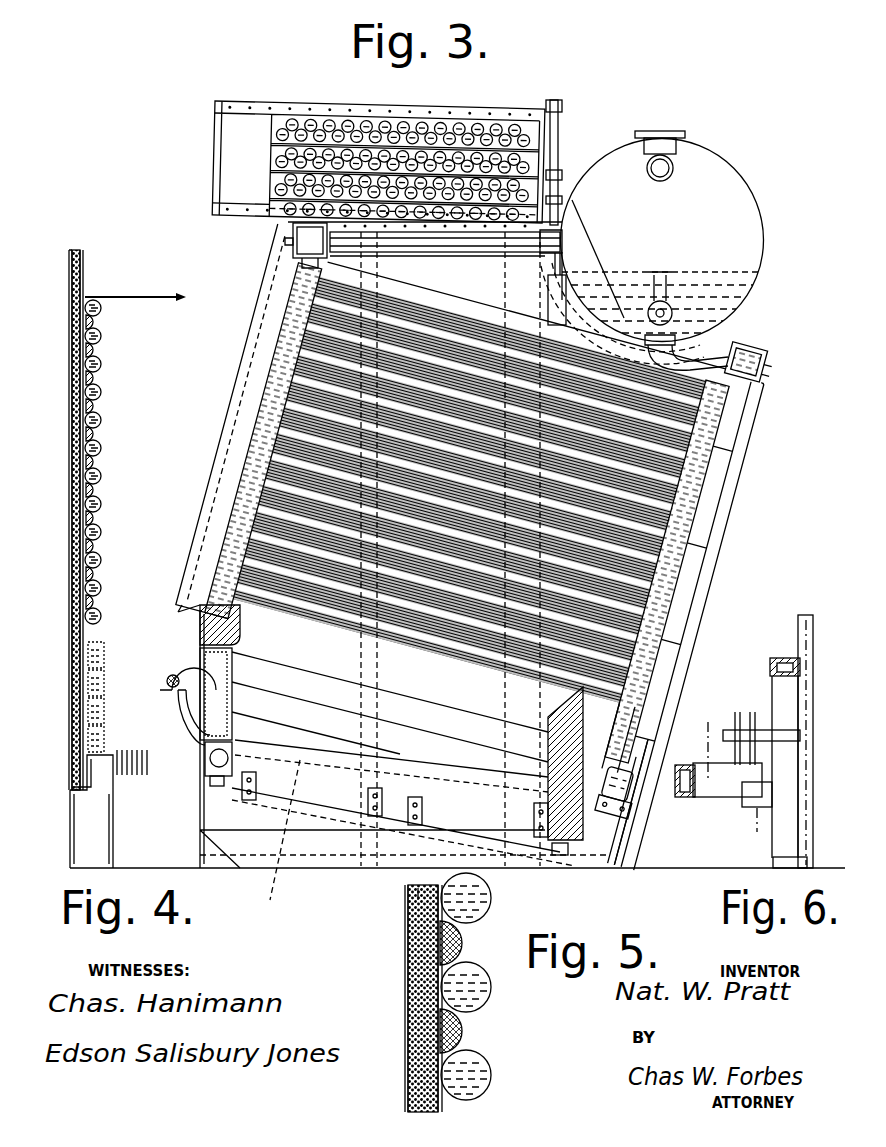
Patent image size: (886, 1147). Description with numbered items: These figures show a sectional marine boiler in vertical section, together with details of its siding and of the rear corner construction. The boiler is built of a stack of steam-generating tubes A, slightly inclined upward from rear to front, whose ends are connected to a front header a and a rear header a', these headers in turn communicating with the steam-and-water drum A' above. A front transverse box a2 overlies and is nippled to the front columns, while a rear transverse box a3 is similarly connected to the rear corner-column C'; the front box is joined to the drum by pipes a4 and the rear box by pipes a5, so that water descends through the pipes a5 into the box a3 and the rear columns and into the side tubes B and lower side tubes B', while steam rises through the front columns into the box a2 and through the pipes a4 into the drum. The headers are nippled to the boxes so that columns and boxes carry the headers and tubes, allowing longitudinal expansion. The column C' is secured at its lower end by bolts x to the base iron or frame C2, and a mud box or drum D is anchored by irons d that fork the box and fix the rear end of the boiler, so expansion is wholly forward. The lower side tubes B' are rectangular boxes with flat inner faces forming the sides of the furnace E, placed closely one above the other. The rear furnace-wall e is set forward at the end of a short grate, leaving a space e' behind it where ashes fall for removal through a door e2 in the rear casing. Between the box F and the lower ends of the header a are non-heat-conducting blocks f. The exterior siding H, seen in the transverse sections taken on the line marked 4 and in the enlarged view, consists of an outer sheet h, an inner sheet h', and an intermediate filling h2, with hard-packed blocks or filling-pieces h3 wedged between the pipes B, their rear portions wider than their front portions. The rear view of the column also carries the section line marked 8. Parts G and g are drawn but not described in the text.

In FIG. 3, the steam-generating tubes A is at (455, 547).
In FIG. 3, the steam-and-water drum A' is at (663, 247).
In FIG. 3, the front header a is at (245, 441).
In FIG. 3, the rear header a' is at (680, 571).
In FIG. 3, the front transverse box a2 is at (300, 240).
In FIG. 3, the rear transverse box a3 is at (752, 358).
In FIG. 3, the front pipes a4 is at (460, 257).
In FIG. 3, the rear pipes a5 is at (700, 362).
In FIG. 3, the section line 4 4 is at (400, 576).
In FIG. 4, the side tubes B is at (105, 462).
In FIG. 5, the side tubes B is at (475, 986).
In FIG. 3, the lower side tubes B' is at (390, 704).
In FIG. 4, the lower side tubes B' is at (109, 697).
In FIG. 6, the rear corner-column C' is at (775, 754).
In FIG. 3, the base iron or frame C2 is at (230, 790).
In FIG. 6, the base iron or frame C2 is at (773, 862).
In FIG. 3, the mud box or drum D is at (630, 782).
In FIG. 6, the mud box or drum D is at (715, 790).
In FIG. 3, the anchor irons d is at (630, 808).
In FIG. 6, the anchor irons d is at (748, 805).
In FIG. 3, the furnace E is at (391, 753).
In FIG. 3, the rear furnace-wall e is at (551, 763).
In FIG. 3, the space behind the rear wall e' is at (610, 738).
In FIG. 3, the door e2 is at (655, 770).
In FIG. 3, the front box F is at (207, 760).
In FIG. 3, the non-heat-conducting blocks f is at (215, 630).
In FIG. 3, the front pipe G is at (205, 655).
In FIG. 3, the joint g is at (190, 620).
In FIG. 4, the exterior siding H is at (72, 533).
In FIG. 5, the exterior siding H is at (408, 1030).
In FIG. 6, the exterior siding H is at (813, 690).
In FIG. 4, the outer sheet h is at (60, 520).
In FIG. 5, the outer sheet h is at (397, 998).
In FIG. 4, the inner sheet h' is at (94, 520).
In FIG. 5, the inner sheet h' is at (432, 989).
In FIG. 4, the intermediate filling h2 is at (71, 254).
In FIG. 5, the intermediate filling h2 is at (419, 894).
In FIG. 4, the blocks or filling-pieces h3 is at (94, 378).
In FIG. 5, the blocks or filling-pieces h3 is at (462, 943).
In FIG. 3, the bolts x is at (215, 780).
In FIG. 6, the section line 8 8 is at (750, 777).